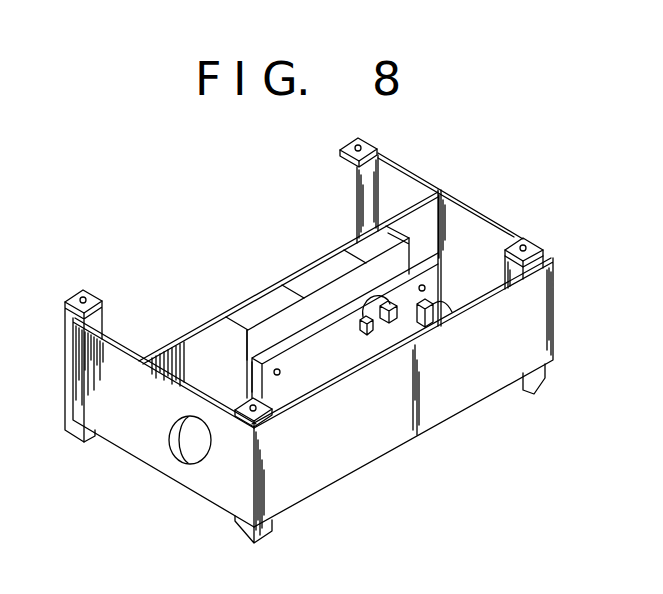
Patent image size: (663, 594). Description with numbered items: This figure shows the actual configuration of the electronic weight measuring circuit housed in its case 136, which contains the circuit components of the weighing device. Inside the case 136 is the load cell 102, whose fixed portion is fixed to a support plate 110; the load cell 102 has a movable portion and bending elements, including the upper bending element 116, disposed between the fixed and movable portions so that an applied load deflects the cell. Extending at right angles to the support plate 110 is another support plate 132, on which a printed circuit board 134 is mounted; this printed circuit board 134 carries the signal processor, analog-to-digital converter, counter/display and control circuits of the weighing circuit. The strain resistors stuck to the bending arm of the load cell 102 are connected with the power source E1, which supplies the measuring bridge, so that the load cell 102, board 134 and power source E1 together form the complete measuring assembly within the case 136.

The load cell 102 is at (338, 266).
The support plate 110 is at (380, 222).
The upper bending element 116 is at (246, 328).
The support plate 132 is at (250, 366).
The printed circuit board 134 is at (345, 325).
The case 136 is at (554, 301).
The power source E1 is at (366, 334).